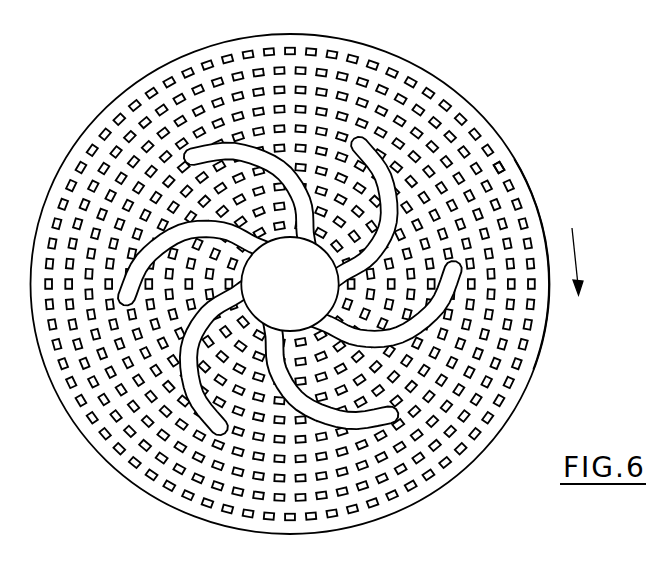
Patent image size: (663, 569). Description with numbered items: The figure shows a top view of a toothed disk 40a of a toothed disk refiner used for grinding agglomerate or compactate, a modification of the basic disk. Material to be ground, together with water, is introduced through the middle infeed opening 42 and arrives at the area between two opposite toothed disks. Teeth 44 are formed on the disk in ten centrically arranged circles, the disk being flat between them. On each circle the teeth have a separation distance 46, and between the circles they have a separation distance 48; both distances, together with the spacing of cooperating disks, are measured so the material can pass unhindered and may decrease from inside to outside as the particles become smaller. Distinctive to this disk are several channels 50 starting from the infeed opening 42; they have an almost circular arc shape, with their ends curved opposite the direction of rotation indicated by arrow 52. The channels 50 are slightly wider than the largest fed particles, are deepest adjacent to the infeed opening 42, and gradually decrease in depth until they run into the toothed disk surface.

The toothed disk 40a is at (518, 138).
The infeed opening 42 is at (243, 272).
The teeth 44 is at (480, 133).
The separation distance 46 is at (506, 169).
The separation distance 48 is at (508, 217).
The channels 50 is at (202, 152).
The arrow 52 is at (577, 255).